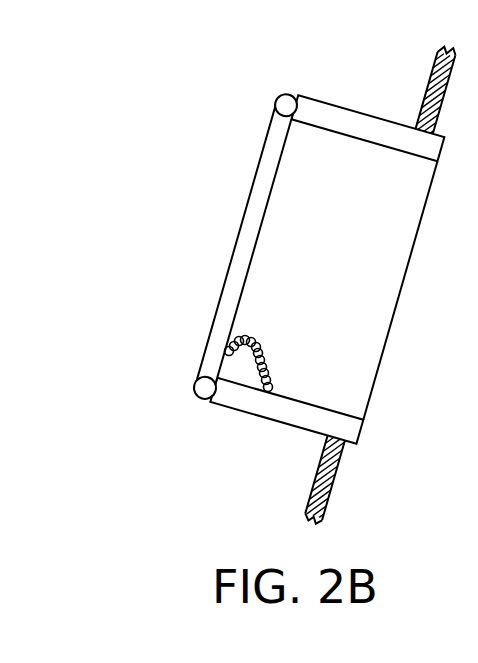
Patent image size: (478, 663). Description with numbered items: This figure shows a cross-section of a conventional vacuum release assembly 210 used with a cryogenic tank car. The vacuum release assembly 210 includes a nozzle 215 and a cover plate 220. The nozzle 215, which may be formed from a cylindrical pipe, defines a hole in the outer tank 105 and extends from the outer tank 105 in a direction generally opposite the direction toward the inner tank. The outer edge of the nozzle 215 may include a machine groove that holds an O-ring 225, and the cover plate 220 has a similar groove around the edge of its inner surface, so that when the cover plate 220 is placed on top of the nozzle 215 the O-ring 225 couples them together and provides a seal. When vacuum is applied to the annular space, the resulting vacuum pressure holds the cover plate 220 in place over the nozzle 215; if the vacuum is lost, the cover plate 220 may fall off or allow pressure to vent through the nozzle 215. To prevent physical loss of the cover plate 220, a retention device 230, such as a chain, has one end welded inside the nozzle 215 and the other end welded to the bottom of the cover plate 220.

The outer tank 105 is at (332, 488).
The vacuum release assembly 210 is at (167, 50).
The nozzle 215 is at (343, 117).
The cover plate 220 is at (247, 232).
The O-ring 225 is at (276, 98).
The retention device 230 is at (262, 344).